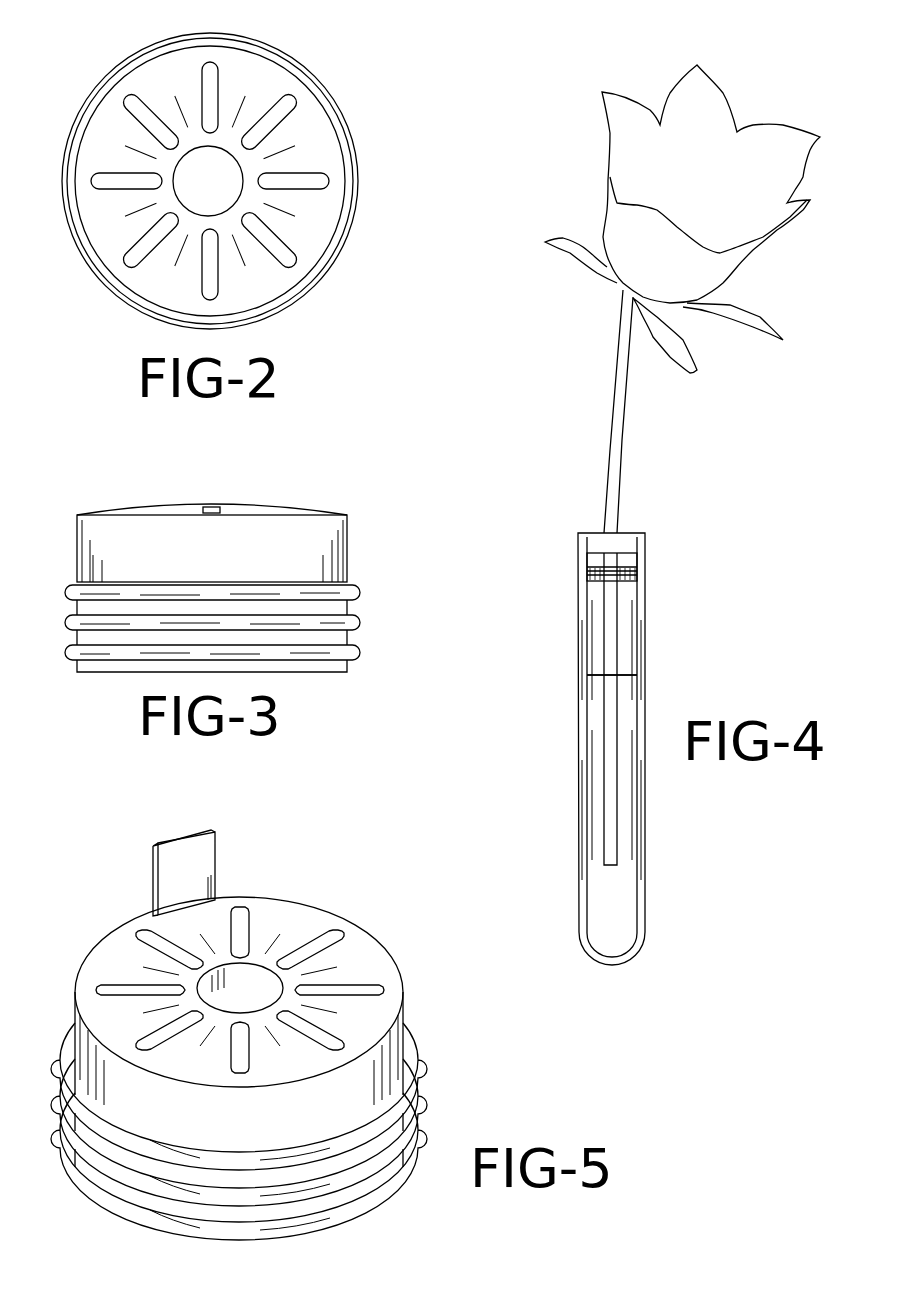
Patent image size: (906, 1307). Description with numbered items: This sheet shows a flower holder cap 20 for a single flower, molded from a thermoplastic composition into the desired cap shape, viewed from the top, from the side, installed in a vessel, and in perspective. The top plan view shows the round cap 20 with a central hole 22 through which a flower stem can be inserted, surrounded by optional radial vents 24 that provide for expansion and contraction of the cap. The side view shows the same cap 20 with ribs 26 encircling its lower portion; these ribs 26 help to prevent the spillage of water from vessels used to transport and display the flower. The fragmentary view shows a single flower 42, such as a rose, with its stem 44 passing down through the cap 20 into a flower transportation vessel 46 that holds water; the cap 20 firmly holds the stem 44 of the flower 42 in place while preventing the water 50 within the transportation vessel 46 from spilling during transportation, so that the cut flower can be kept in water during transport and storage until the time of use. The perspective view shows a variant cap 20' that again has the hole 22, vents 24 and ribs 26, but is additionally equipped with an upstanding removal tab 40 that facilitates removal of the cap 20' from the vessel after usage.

In FIG. 2, the flower holder cap 20 is at (191, 164).
In FIG. 3, the flower holder cap 20 is at (194, 521).
In FIG. 4, the flower holder cap 20 is at (675, 548).
In FIG. 5, the flower holder cap with removal tab 20' is at (224, 991).
In FIG. 2, the hole 22 is at (241, 190).
In FIG. 5, the hole 22 is at (263, 983).
In FIG. 2, the vents 24 is at (265, 250).
In FIG. 5, the vents 24 is at (347, 983).
In FIG. 2, the ribs 26 is at (293, 300).
In FIG. 3, the ribs 26 is at (356, 590).
In FIG. 5, the ribs 26 is at (407, 1097).
In FIG. 5, the removal tab 40 is at (202, 863).
In FIG. 4, the flower 42 is at (597, 128).
In FIG. 4, the stem 44 is at (612, 448).
In FIG. 4, the flower transportation vessel 46 is at (578, 648).
In FIG. 4, the water 50 is at (618, 883).